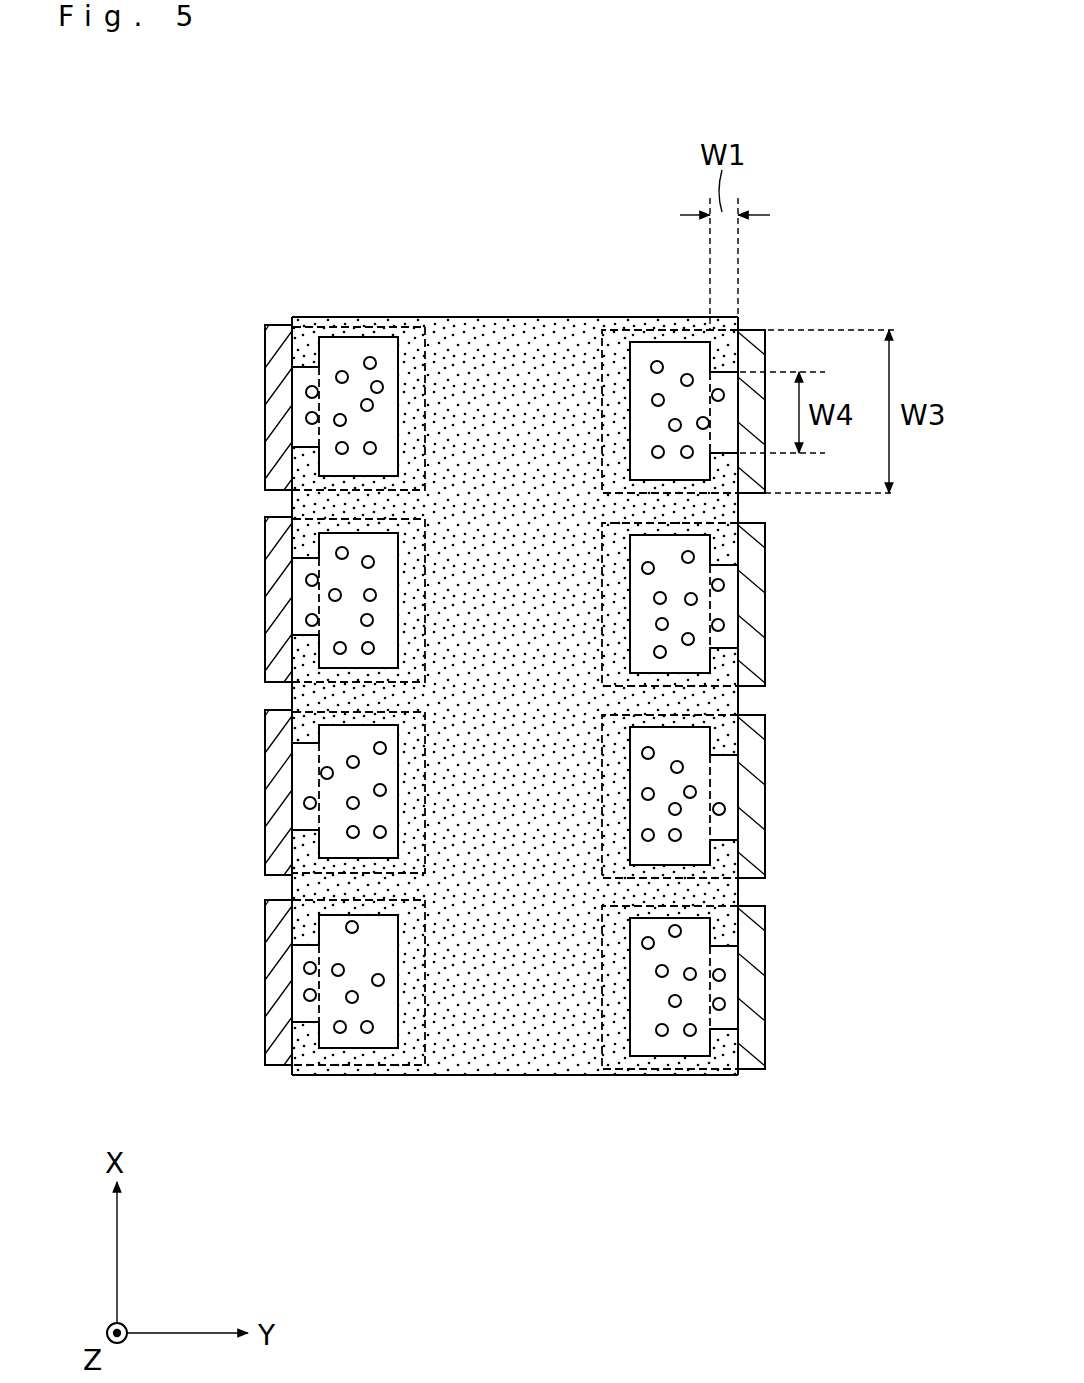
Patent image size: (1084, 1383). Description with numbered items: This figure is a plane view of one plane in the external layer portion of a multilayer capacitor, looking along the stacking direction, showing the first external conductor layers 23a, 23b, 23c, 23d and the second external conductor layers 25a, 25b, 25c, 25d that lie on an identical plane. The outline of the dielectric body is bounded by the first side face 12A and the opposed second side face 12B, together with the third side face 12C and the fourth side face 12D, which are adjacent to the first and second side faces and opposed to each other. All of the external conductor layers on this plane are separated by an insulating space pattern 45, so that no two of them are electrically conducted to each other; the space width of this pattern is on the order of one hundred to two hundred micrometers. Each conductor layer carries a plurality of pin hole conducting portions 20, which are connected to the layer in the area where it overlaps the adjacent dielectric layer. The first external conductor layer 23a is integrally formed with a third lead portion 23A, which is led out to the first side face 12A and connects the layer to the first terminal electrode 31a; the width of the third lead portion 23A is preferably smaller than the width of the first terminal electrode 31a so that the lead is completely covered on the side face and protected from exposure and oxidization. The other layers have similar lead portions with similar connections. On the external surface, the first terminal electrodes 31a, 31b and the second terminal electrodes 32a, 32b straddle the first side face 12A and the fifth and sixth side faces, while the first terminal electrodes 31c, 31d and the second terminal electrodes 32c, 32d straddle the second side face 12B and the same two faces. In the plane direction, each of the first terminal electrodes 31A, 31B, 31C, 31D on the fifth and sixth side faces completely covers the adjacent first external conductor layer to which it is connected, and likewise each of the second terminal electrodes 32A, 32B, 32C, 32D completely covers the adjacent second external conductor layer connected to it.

The first side face 12A is at (740, 695).
The second side face 12B is at (292, 695).
The third side face 12C is at (540, 1076).
The fourth side face 12D is at (452, 316).
The pin hole conducting portion 20 is at (306, 392).
The third lead portion 23A is at (739, 328).
The first external conductor layer 23a is at (675, 345).
The first external conductor layer 23b is at (690, 838).
The first external conductor layer 23c is at (335, 1000).
The first external conductor layer 23d is at (340, 652).
The second external conductor layer 25a is at (688, 645).
The second external conductor layer 25b is at (690, 1028).
The second external conductor layer 25c is at (335, 820).
The second external conductor layer 25d is at (338, 448).
The first terminal electrode 31A is at (600, 390).
The first terminal electrode 31B is at (740, 881).
The first terminal electrode 31C is at (320, 1070).
The first terminal electrode 31D is at (338, 510).
The first terminal electrode 31a is at (748, 355).
The first terminal electrode 31b is at (748, 748).
The first terminal electrode 31c is at (283, 917).
The first terminal electrode 31d is at (283, 531).
The second terminal electrode 32A is at (742, 513).
The second terminal electrode 32B is at (740, 1071).
The second terminal electrode 32C is at (300, 886).
The second terminal electrode 32D is at (345, 316).
The second terminal electrode 32a is at (748, 553).
The second terminal electrode 32b is at (748, 930).
The second terminal electrode 32c is at (283, 725).
The second terminal electrode 32d is at (283, 340).
The insulating space pattern 45 is at (500, 910).